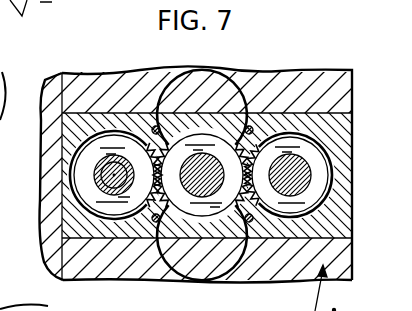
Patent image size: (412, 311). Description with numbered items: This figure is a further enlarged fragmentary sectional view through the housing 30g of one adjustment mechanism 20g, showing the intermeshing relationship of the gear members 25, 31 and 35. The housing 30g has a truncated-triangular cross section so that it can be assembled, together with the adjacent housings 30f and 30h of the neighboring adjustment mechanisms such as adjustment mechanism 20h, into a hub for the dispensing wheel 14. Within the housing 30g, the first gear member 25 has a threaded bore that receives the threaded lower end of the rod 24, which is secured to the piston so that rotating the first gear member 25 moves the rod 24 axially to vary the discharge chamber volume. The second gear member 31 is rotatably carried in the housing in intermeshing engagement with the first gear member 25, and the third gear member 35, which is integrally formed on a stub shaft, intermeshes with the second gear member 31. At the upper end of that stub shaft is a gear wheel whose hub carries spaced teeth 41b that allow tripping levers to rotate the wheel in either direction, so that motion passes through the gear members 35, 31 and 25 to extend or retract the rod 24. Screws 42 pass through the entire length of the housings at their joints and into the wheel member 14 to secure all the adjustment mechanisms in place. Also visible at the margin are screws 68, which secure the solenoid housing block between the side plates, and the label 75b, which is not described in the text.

The dispensing wheel 14 is at (43, 139).
The adjustment mechanism 20g is at (78, 112).
The adjustment mechanism 20h is at (275, 71).
The rod 24 is at (110, 176).
The first gear member 25 is at (125, 210).
The housing 30f is at (300, 272).
The housing 30g is at (118, 116).
The housing 30h is at (298, 96).
The second gear member 31 is at (204, 213).
The third gear member 35 is at (321, 173).
The teeth 41b is at (191, 190).
The screws 42 is at (17, 142).
The screws 68 is at (31, 21).
The adjacent figure element 75b is at (93, 6).